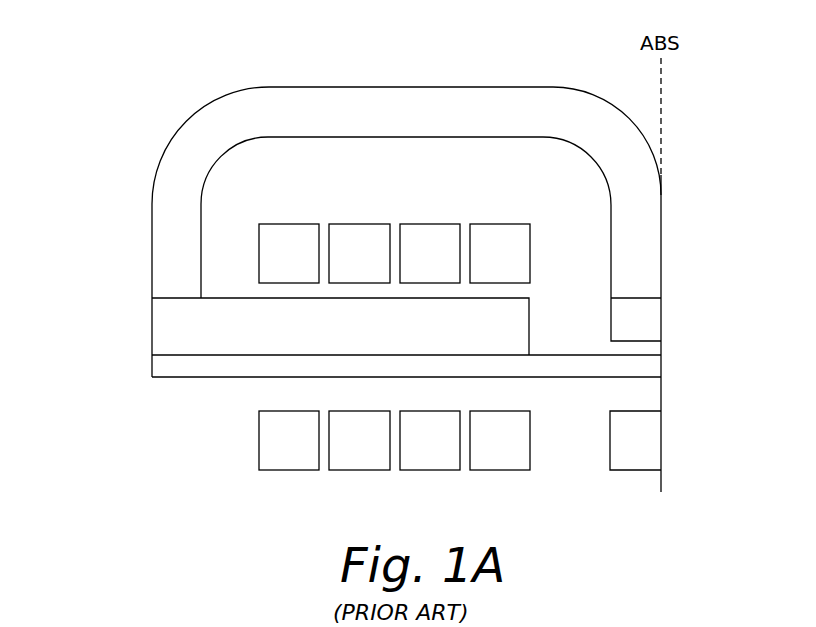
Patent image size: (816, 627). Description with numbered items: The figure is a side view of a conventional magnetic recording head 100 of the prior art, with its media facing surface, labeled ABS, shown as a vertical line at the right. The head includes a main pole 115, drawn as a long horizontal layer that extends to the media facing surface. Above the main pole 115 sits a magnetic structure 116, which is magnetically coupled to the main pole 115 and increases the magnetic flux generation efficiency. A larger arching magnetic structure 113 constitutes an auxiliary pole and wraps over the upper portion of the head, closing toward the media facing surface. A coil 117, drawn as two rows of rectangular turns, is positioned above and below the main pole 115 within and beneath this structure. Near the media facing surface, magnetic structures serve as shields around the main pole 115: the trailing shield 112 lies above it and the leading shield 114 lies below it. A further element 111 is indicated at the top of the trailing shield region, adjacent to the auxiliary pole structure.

The magnetic recording head 100 is at (128, 86).
The trailing shield 111 is at (637, 297).
The trailing shield 112 is at (657, 318).
The magnetic structure constituting an auxiliary pole 113 is at (403, 96).
The leading shield 114 is at (657, 442).
The main pole 115 is at (657, 365).
The magnetic structure 116 is at (157, 324).
The coil 117 is at (289, 222).